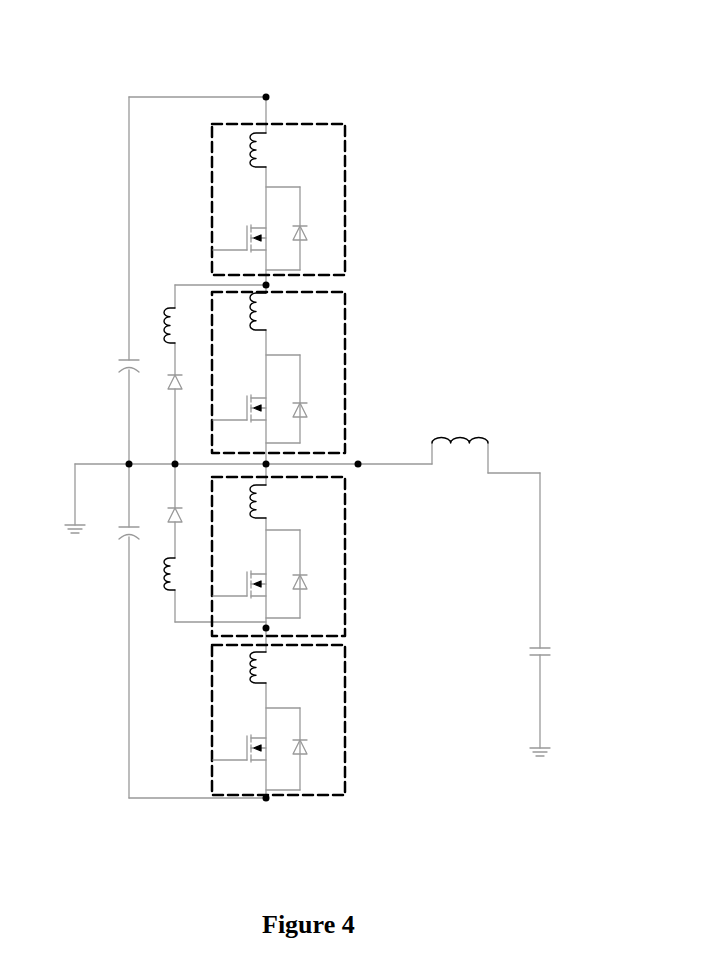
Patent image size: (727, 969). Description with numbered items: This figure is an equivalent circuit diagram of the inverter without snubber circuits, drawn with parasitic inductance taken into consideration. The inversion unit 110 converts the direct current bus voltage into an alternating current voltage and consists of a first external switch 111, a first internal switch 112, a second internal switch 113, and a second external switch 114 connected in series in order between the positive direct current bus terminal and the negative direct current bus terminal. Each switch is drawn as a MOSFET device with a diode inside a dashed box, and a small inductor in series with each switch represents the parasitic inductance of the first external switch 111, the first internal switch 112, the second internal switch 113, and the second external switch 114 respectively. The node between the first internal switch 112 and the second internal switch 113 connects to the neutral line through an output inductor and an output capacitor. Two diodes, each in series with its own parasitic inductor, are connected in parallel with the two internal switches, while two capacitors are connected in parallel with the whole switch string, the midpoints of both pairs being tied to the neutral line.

The inversion unit 110 is at (549, 39).
The first external switch 111 is at (348, 123).
The first internal switch 112 is at (348, 297).
The second internal switch 113 is at (349, 603).
The second external switch 114 is at (349, 769).